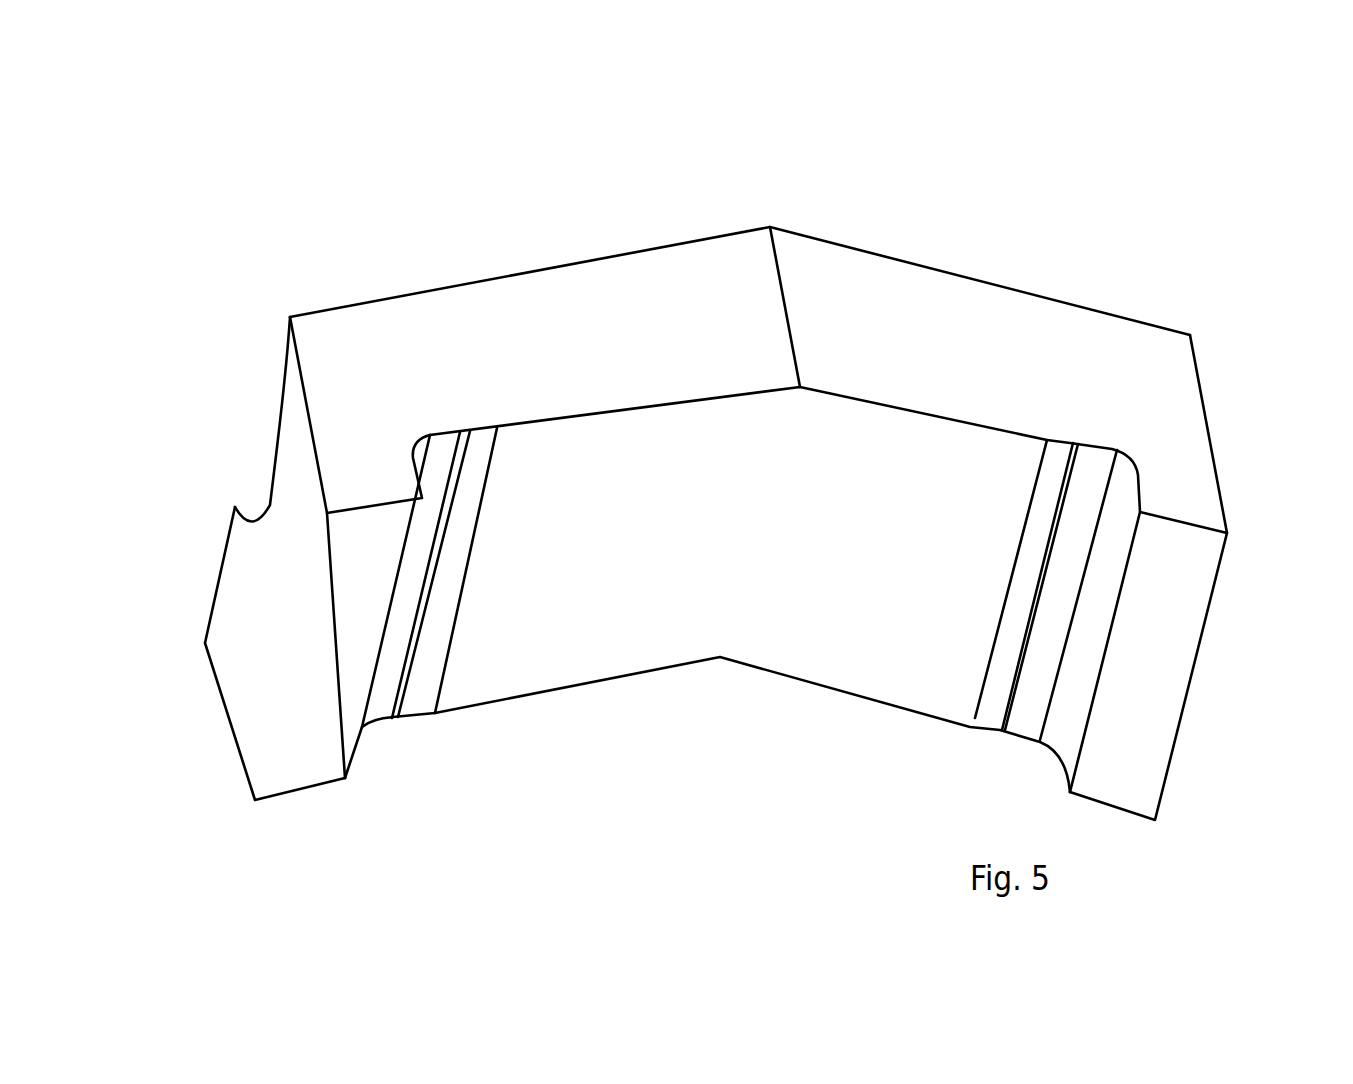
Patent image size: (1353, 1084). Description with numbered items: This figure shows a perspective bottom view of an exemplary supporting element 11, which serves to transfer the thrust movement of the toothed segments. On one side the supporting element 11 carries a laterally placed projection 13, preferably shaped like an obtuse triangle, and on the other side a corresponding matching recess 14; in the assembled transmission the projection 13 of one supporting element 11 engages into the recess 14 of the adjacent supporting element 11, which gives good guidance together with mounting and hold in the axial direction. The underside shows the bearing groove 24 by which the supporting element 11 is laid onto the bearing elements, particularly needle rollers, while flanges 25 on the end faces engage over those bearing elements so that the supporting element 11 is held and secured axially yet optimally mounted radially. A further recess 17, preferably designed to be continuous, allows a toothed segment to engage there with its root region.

The supporting element 11 is at (696, 467).
The projection 13 is at (843, 258).
The recess 14 is at (717, 668).
The recess 17 is at (255, 453).
The bearing groove 24 is at (403, 742).
The flange 25 is at (230, 662).